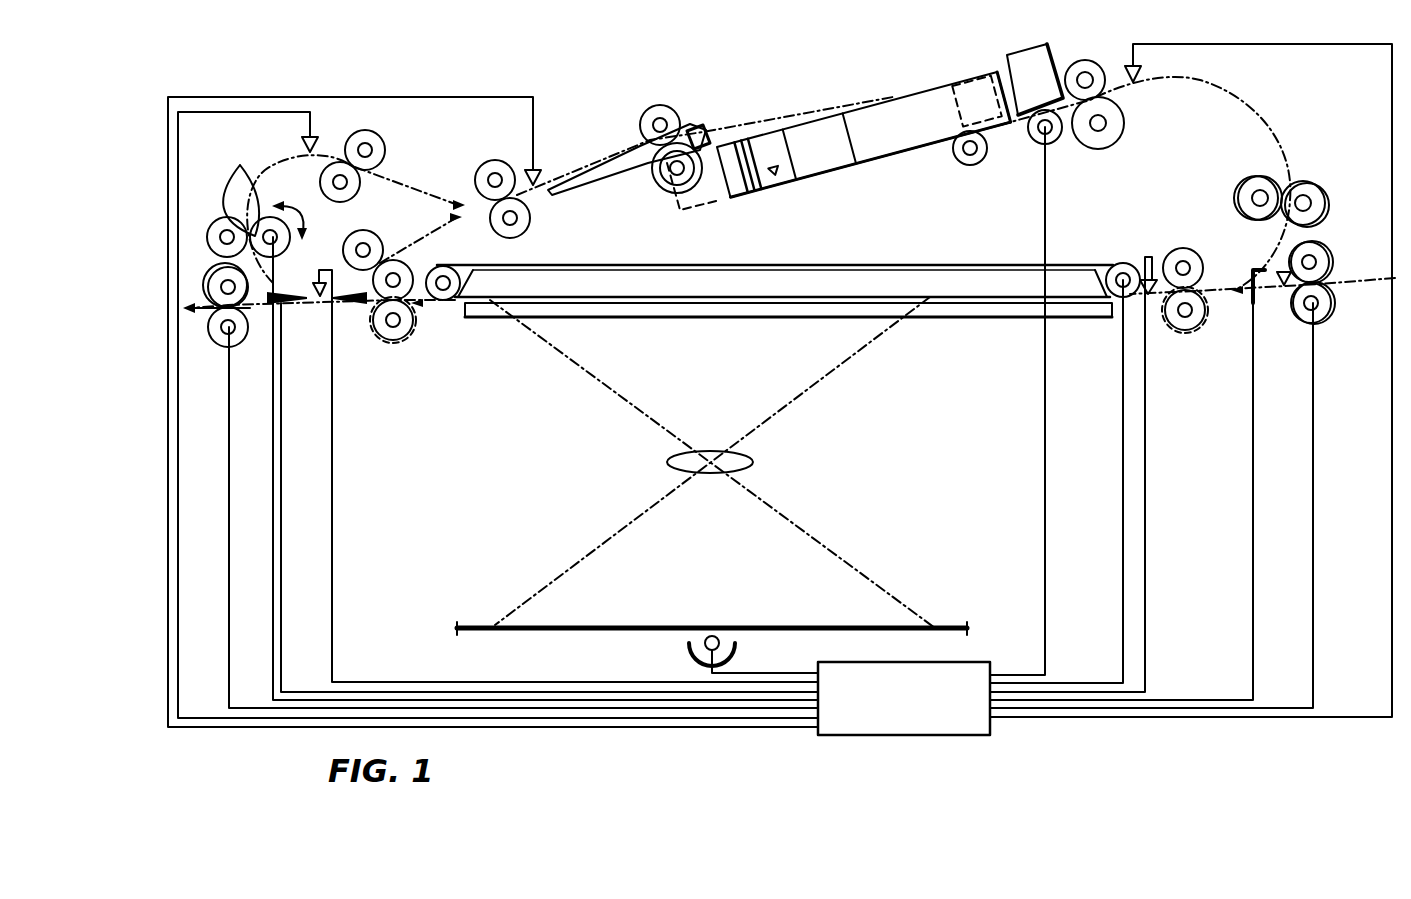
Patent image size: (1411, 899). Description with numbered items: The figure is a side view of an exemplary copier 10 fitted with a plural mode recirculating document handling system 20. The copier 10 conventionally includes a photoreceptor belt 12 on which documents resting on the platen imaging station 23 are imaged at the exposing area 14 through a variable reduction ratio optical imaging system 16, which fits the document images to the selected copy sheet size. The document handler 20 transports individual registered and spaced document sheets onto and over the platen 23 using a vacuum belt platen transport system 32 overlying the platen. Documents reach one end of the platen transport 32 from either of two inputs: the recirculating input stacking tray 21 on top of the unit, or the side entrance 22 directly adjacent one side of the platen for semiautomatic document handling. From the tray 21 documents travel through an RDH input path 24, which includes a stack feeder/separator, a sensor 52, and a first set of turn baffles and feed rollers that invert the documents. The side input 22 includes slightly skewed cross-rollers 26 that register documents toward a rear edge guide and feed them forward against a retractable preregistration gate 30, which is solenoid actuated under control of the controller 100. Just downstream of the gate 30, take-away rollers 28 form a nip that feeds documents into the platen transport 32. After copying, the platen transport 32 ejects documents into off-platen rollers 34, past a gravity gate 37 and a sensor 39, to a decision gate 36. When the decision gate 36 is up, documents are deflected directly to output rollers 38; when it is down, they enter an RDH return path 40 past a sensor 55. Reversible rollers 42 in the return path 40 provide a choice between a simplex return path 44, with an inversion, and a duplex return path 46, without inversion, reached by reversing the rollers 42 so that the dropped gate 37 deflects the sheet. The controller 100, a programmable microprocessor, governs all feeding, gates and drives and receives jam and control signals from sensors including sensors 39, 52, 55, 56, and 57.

The copier 10 is at (552, 402).
The photoreceptor belt 12 is at (471, 622).
The imaging exposing area 14 is at (696, 590).
The variable reduction ratio optical imaging system 16 is at (790, 474).
The document handling system 20 is at (625, 110).
The RDH input stacking tray 21 is at (912, 145).
The side entrance 22 is at (1340, 277).
The platen imaging station 23 is at (950, 310).
The RDH input path 24 is at (1265, 250).
The cross-rollers 26 is at (1318, 258).
The take-away rollers 28 is at (1178, 260).
The SADH preregistration gate 30 is at (1258, 285).
The vacuum belt platen transport system 32 is at (927, 247).
The off-platen rollers 34 is at (382, 292).
The decision gate 36 is at (271, 303).
The gravity gate 37 is at (353, 292).
The output rollers 38 is at (222, 288).
The sensor 39 is at (325, 305).
The RDH return path 40 is at (282, 288).
The reversible rollers 42 is at (233, 200).
The simplex return path 44 is at (400, 192).
The duplex return path 46 is at (423, 230).
The sensor 52 is at (1142, 76).
The sensor 55 is at (314, 134).
The sensor 56 is at (537, 178).
The sensor 57 is at (1143, 268).
The controller 100 is at (990, 668).